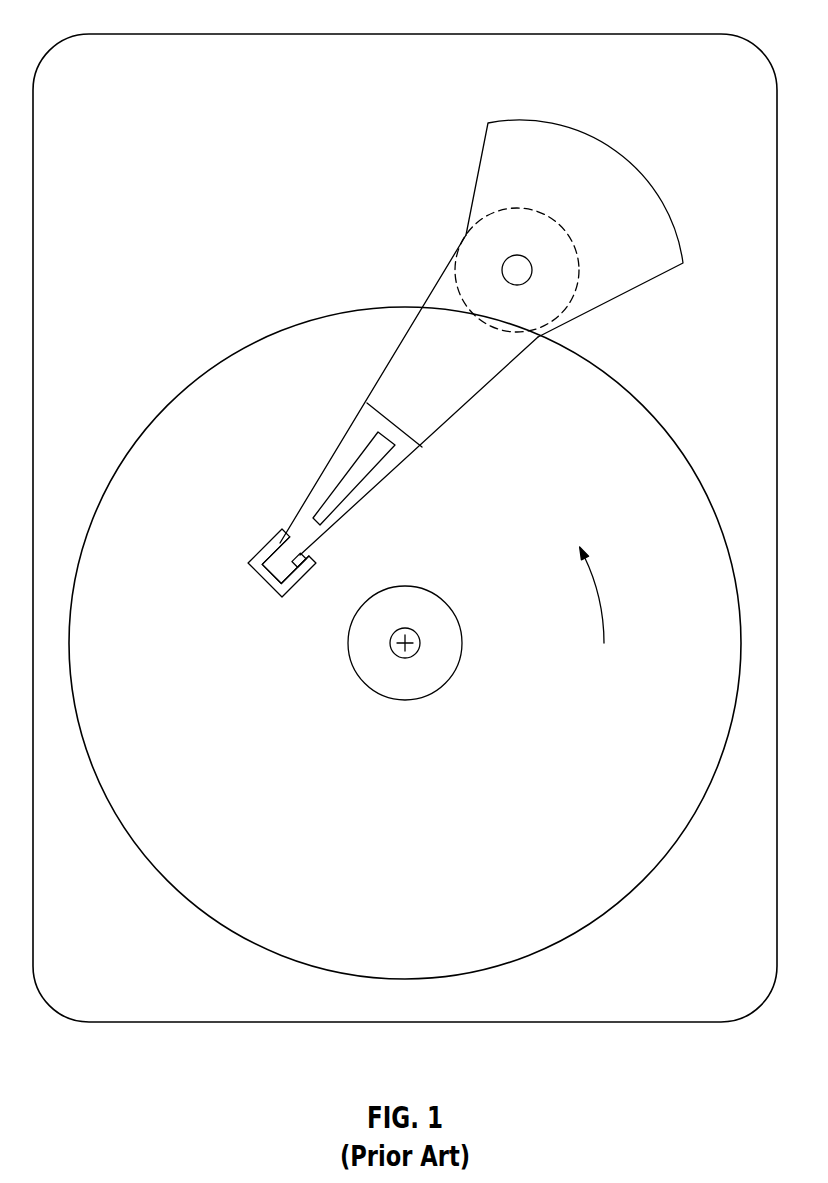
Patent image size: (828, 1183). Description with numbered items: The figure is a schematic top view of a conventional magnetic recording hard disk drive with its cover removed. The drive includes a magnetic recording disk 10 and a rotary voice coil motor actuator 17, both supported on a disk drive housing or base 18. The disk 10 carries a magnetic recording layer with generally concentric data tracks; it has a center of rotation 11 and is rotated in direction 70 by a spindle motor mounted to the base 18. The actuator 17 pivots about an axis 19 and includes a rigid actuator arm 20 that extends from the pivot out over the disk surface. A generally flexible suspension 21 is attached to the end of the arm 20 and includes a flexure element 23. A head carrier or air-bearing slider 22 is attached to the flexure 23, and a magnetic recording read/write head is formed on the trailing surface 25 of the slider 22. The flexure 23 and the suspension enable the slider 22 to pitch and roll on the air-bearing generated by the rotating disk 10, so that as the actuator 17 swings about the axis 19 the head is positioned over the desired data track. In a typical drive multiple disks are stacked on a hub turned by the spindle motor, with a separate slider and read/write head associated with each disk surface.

The magnetic recording disk 10 is at (623, 900).
The center of rotation 11 is at (418, 638).
The rotary voice coil motor actuator 17 is at (622, 147).
The disk drive housing or base 18 is at (660, 34).
The pivot axis 19 is at (503, 268).
The rigid actuator arm 20 is at (403, 358).
The suspension 21 is at (358, 437).
The air-bearing slider 22 is at (275, 537).
The flexure element 23 is at (292, 568).
The trailing surface 25 is at (255, 577).
The direction of rotation 70 is at (603, 615).